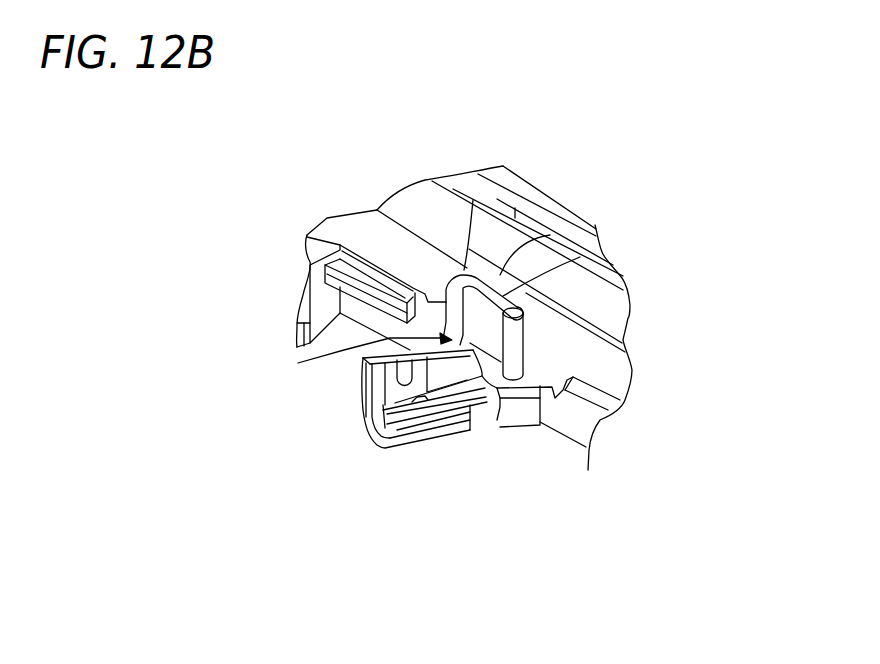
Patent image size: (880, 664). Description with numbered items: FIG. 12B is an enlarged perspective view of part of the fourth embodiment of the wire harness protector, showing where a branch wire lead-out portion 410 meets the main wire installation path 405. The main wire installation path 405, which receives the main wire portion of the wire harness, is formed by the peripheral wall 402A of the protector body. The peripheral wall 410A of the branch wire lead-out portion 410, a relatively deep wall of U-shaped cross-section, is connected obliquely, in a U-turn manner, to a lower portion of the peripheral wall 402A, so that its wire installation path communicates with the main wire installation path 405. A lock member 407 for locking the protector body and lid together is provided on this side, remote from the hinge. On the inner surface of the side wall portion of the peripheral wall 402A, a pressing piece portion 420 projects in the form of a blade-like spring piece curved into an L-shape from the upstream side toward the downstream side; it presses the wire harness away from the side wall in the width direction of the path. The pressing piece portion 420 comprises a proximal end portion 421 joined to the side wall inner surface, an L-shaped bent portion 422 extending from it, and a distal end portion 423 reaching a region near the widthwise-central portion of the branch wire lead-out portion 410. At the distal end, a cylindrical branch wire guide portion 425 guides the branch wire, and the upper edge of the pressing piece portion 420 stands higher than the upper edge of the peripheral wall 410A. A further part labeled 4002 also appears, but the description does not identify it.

The main wire installation path 405 is at (391, 242).
The proximal end portion 421 is at (437, 297).
The L-shaped bent portion 422 is at (494, 283).
The pressing piece portion 420 is at (596, 231).
The distal end portion 423 is at (548, 273).
The branch wire guide portion 425 is at (525, 333).
The branch wire lead-out portion 410 is at (373, 446).
The peripheral wall 410A is at (397, 450).
The lock member 407 is at (462, 432).
The peripheral wall 402A is at (572, 417).
The frame 4002 is at (584, 447).